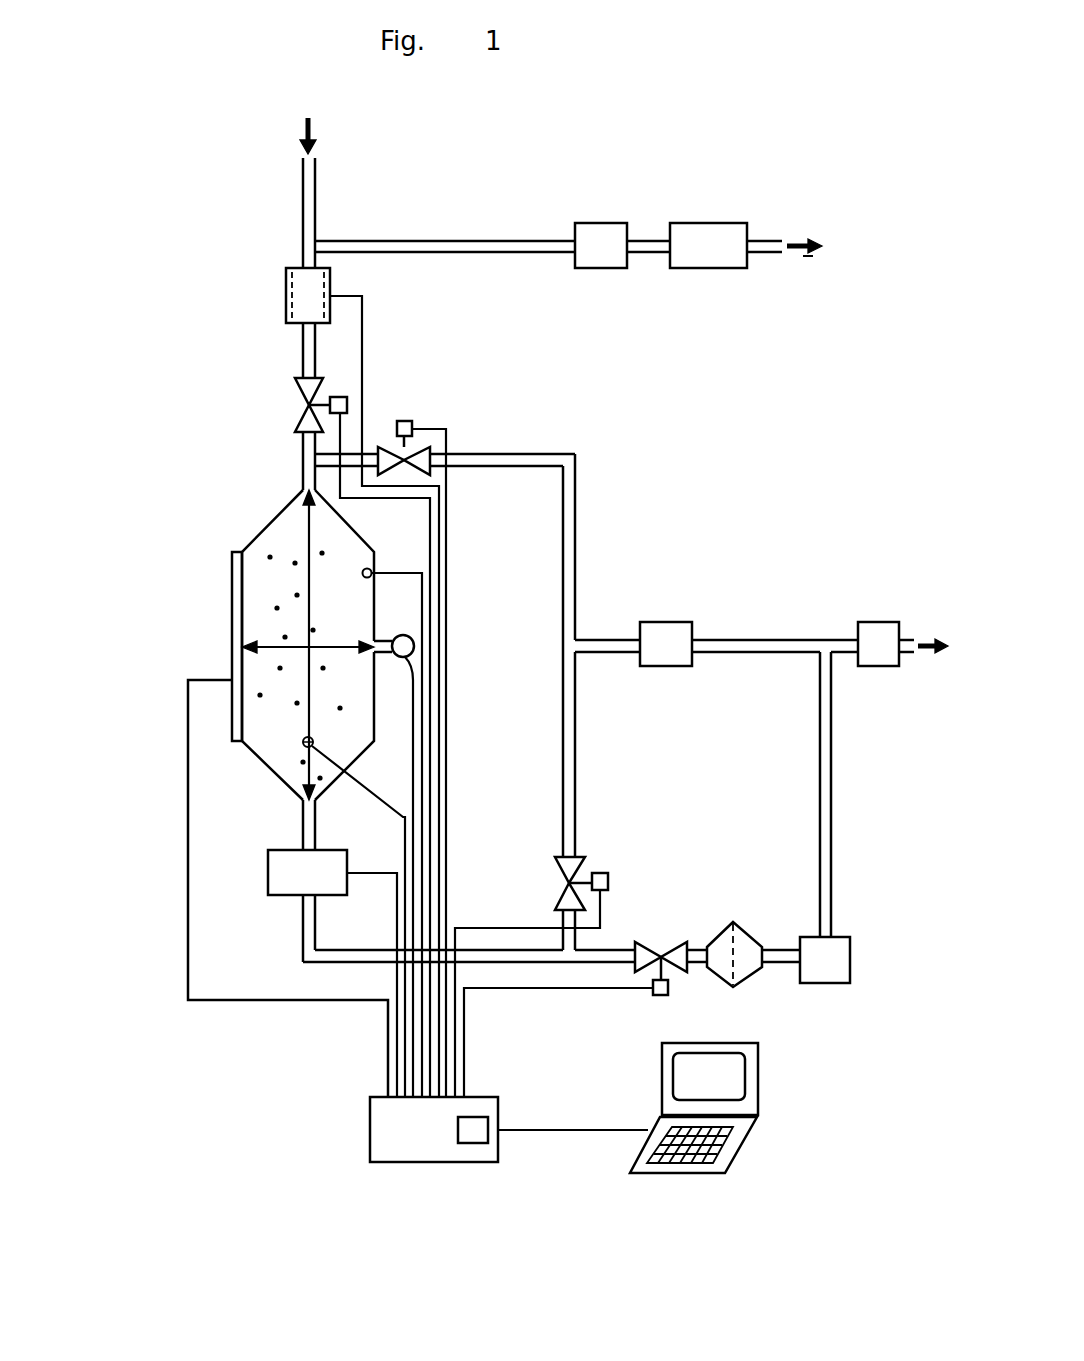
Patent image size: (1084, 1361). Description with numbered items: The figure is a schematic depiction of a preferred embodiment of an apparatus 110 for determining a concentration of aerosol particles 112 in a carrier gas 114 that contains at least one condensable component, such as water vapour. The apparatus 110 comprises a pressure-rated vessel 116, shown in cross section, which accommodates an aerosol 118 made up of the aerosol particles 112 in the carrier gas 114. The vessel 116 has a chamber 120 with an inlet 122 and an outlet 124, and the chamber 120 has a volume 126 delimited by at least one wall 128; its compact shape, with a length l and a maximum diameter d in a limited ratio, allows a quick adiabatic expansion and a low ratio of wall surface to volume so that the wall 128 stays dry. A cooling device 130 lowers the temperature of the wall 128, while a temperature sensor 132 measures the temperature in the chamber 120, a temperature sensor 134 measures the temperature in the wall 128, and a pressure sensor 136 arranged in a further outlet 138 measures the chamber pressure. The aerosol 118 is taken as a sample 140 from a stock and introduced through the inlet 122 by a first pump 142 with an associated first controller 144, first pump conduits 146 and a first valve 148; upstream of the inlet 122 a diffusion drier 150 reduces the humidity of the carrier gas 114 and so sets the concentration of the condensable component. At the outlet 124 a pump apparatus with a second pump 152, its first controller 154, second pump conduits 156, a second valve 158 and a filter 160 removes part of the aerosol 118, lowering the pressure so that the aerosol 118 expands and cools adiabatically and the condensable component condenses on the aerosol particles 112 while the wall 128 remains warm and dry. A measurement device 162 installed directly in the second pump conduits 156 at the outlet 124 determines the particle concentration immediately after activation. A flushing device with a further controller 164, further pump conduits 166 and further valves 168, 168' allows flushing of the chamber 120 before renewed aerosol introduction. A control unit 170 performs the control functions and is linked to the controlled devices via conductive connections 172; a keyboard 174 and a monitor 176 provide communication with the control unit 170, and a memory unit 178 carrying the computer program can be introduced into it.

The apparatus 110 is at (672, 159).
The aerosol particles 112 is at (308, 170).
The carrier gas 114 is at (300, 516).
The pressure-rated vessel 116 is at (180, 581).
The aerosol 118 is at (172, 528).
The chamber 120 is at (270, 748).
The inlet 122 is at (297, 485).
The outlet 124 is at (300, 802).
The volume 126 is at (228, 793).
The wall 128 is at (242, 635).
The cooling device 130 is at (237, 620).
The temperature sensor 132 is at (303, 741).
The temperature sensor 134 is at (372, 570).
The pressure sensor 136 is at (405, 643).
The further outlet 138 is at (385, 652).
The sample 140 is at (308, 120).
The first pump 142 is at (710, 253).
The first controller 144 is at (593, 253).
The first pump conduits 146 is at (393, 246).
The first valve 148 is at (308, 392).
The diffusion drier 150 is at (303, 292).
The second pump 152 is at (878, 650).
The first controller 154 is at (827, 970).
The second pump conduits 156 is at (823, 808).
The second valve 158 is at (643, 947).
The filter 160 is at (743, 963).
The measurement device 162 is at (285, 878).
The further controller 164 is at (665, 653).
The further pump conduits 166 is at (565, 723).
The further valve 168 is at (419, 434).
The further valve 168' is at (614, 865).
The control unit 170 is at (417, 1147).
The conductive connections 172 is at (415, 833).
The keyboard 174 is at (685, 1150).
The monitor 176 is at (733, 1080).
The memory unit 178 is at (477, 1133).